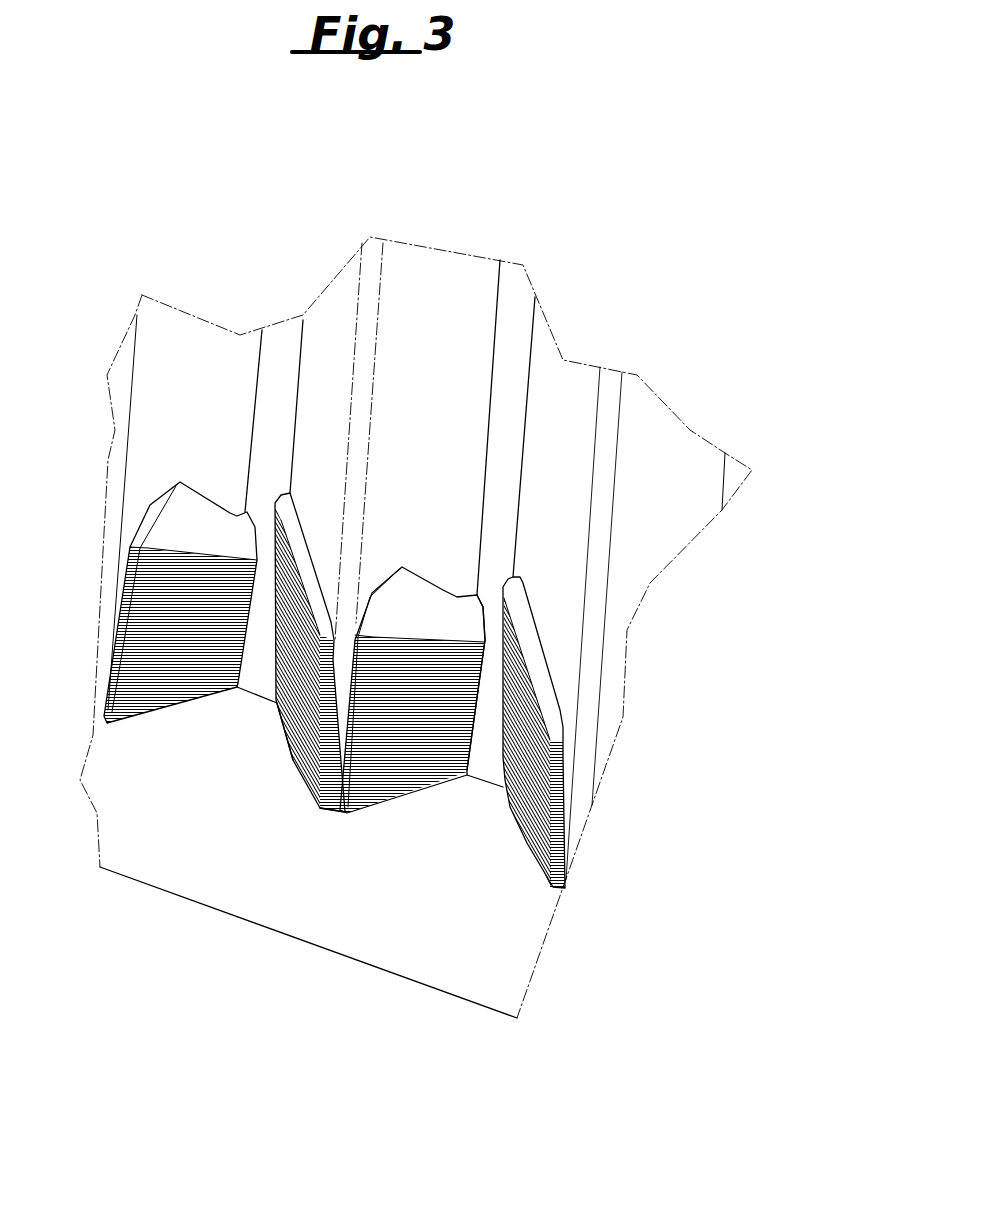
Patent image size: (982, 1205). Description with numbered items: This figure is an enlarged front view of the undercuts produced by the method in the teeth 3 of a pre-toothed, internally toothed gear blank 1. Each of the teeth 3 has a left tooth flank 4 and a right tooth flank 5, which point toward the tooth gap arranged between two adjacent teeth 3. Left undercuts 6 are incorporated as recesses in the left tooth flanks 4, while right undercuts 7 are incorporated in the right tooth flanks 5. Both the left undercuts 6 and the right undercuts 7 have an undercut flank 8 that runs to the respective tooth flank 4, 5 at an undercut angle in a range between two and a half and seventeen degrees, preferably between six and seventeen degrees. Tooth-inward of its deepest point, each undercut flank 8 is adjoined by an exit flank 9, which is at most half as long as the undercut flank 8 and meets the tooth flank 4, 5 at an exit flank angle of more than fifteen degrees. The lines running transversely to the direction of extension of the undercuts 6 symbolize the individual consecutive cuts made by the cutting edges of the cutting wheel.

The gear blank 1 is at (735, 423).
The teeth 3 is at (220, 375).
The left tooth flank 4 is at (158, 337).
The right tooth flank 5 is at (332, 322).
The left undercut 6 is at (128, 698).
The right undercut 7 is at (298, 735).
The undercut flank 8 is at (367, 780).
The exit flank 9 is at (428, 615).